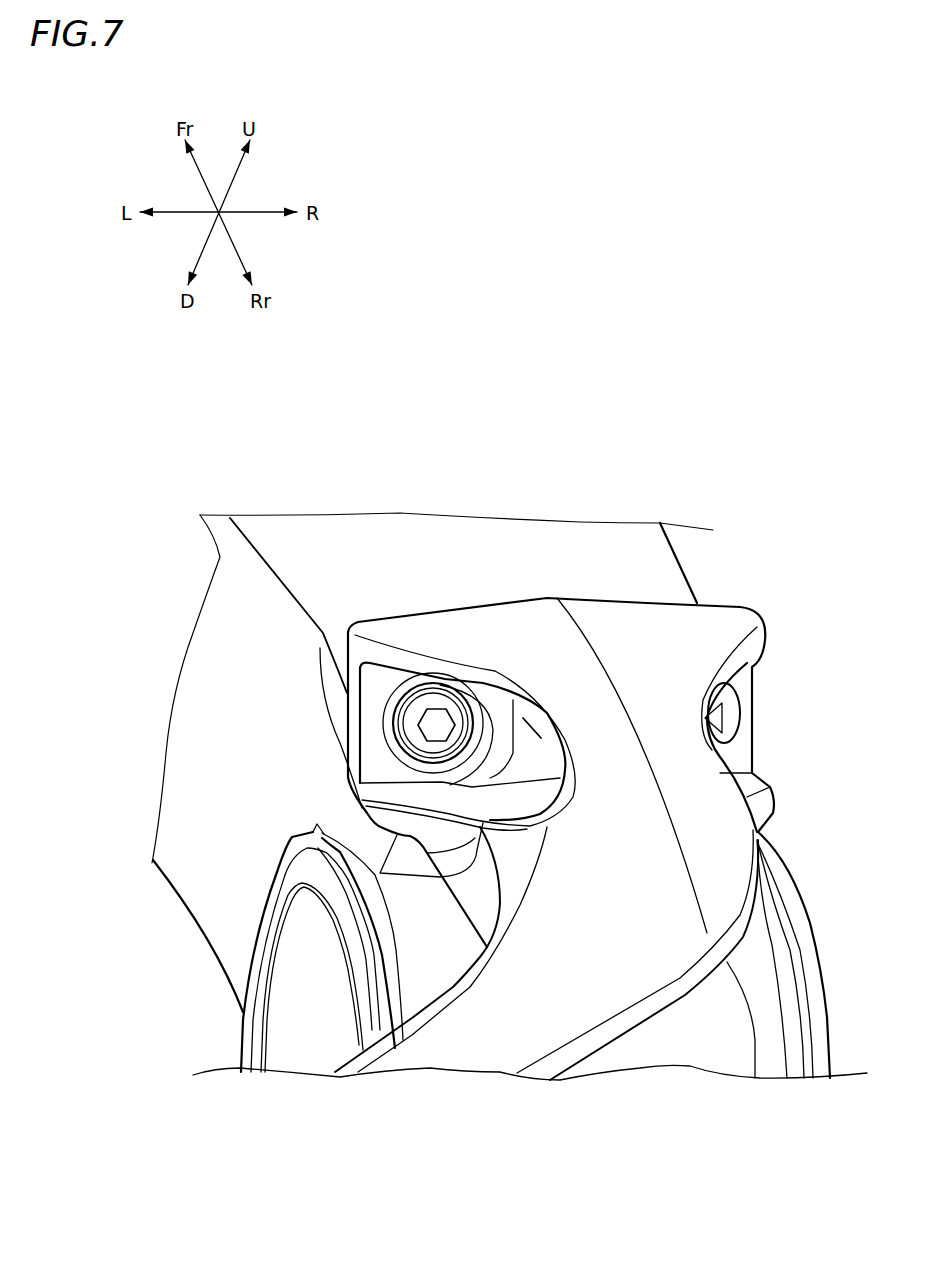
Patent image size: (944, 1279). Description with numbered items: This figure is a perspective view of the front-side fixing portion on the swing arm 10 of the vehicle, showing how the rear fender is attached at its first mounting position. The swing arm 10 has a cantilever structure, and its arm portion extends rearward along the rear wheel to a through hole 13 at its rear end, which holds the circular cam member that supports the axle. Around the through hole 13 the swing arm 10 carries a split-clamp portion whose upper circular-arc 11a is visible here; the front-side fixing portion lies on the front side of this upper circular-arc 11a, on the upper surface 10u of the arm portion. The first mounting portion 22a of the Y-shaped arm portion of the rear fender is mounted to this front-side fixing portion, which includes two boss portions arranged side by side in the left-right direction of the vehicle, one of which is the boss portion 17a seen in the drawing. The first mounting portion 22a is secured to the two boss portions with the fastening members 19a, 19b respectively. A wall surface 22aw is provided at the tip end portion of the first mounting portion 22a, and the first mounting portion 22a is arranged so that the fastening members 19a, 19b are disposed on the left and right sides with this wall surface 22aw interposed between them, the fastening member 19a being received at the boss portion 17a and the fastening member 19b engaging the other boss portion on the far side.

The swing arm 10 is at (320, 553).
The upper surface 10u is at (485, 545).
The boss portion 17a is at (323, 633).
The first mounting portion 22a is at (612, 783).
The wall surface 22aw is at (520, 695).
The fastening member 19a is at (385, 710).
The fastening member 19b is at (723, 708).
The through hole 13 is at (298, 950).
The upper circular-arc 11a is at (400, 962).